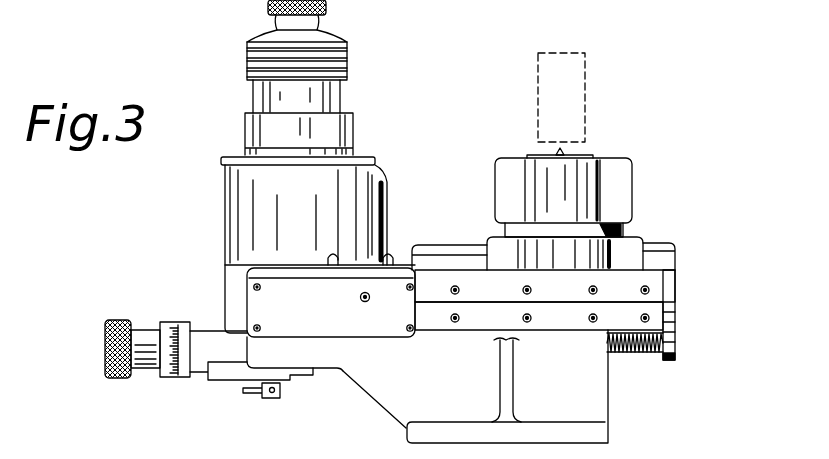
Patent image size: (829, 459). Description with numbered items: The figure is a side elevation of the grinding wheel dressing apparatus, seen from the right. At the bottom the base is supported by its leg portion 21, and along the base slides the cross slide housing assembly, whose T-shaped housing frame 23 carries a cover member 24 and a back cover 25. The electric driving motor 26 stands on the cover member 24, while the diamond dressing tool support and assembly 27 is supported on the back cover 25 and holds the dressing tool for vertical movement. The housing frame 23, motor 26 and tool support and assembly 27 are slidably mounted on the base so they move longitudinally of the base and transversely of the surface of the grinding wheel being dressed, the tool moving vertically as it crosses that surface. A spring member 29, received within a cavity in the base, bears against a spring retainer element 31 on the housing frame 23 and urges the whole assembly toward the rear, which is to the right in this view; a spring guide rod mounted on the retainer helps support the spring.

The leg portion 21 is at (592, 407).
The T-shaped housing frame 23 is at (328, 323).
The cover member 24 is at (263, 272).
The back cover 25 is at (663, 262).
The electric driving motor 26 is at (328, 100).
The diamond dressing tool support and assembly 27 is at (635, 165).
The spring member 29 is at (638, 350).
The spring retainer element 31 is at (677, 355).